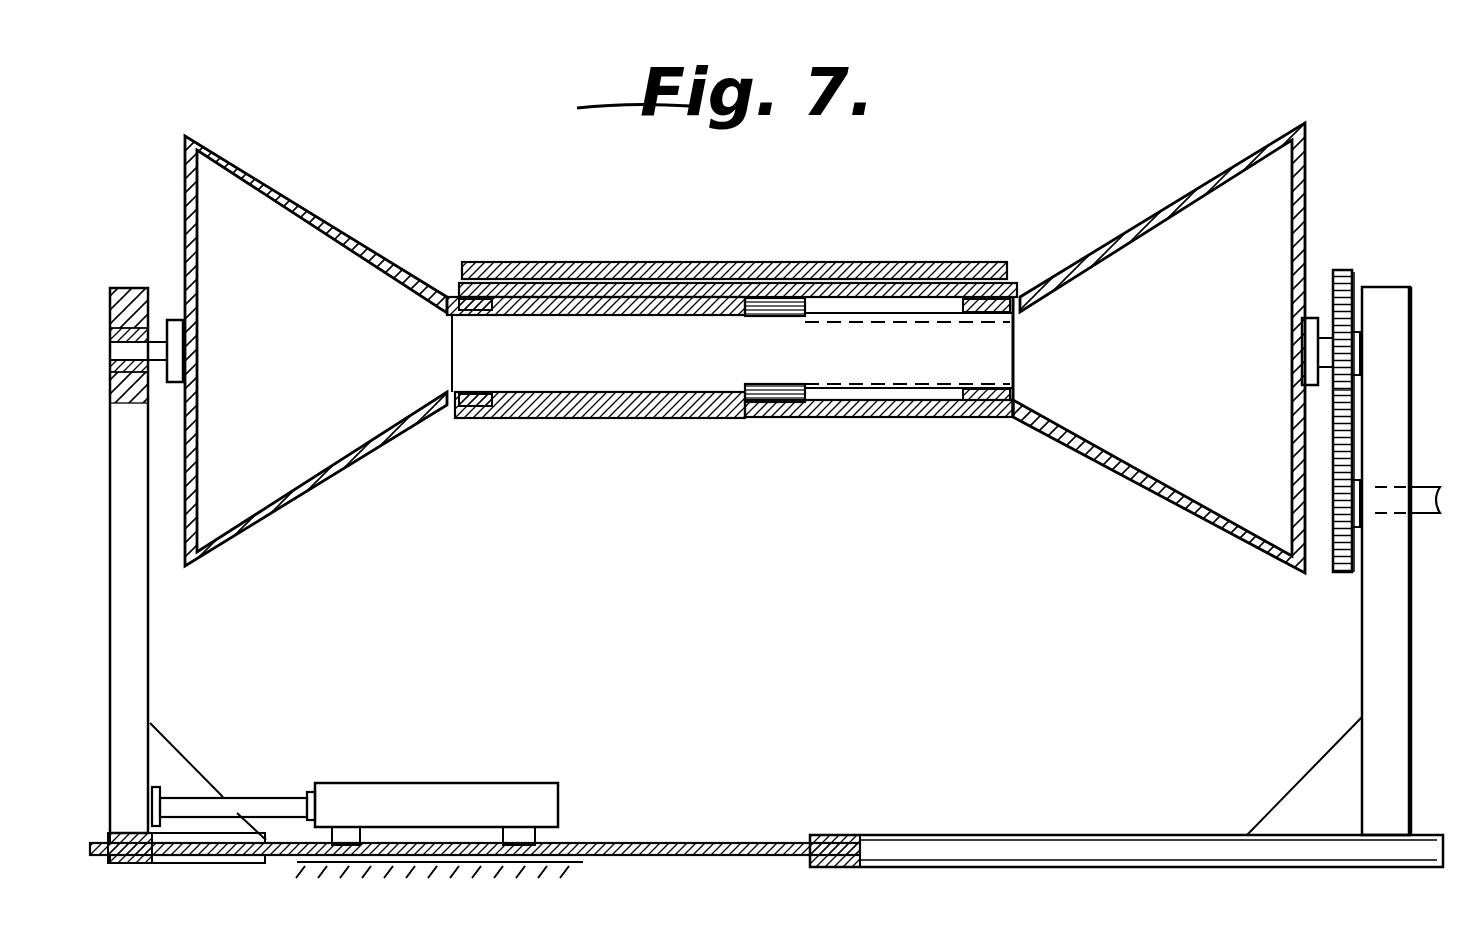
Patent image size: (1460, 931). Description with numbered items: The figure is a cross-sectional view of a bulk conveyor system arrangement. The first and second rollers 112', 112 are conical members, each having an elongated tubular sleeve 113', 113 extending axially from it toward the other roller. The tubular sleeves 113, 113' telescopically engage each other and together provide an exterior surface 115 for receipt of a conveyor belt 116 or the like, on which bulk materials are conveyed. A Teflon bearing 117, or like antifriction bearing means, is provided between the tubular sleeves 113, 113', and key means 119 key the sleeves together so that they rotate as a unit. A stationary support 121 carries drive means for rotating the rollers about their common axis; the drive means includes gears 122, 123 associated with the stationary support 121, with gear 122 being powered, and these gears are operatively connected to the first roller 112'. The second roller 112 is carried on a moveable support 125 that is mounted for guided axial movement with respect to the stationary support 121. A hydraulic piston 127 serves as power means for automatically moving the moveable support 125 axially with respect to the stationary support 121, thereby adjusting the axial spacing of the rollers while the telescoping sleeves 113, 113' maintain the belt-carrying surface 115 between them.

The second roller 112 is at (316, 351).
The first roller 112' is at (1159, 359).
The tubular sleeve 113 is at (596, 357).
The tubular sleeve 113' is at (879, 385).
The exterior surface 115 is at (882, 290).
The conveyor belt 116 is at (635, 266).
The Teflon bearing 117 is at (982, 418).
The key means 119 is at (802, 387).
The stationary support 121 is at (1365, 667).
The gear 122 is at (1340, 574).
The gear 123 is at (1372, 260).
The moveable support 125 is at (133, 625).
The hydraulic piston 127 is at (425, 785).